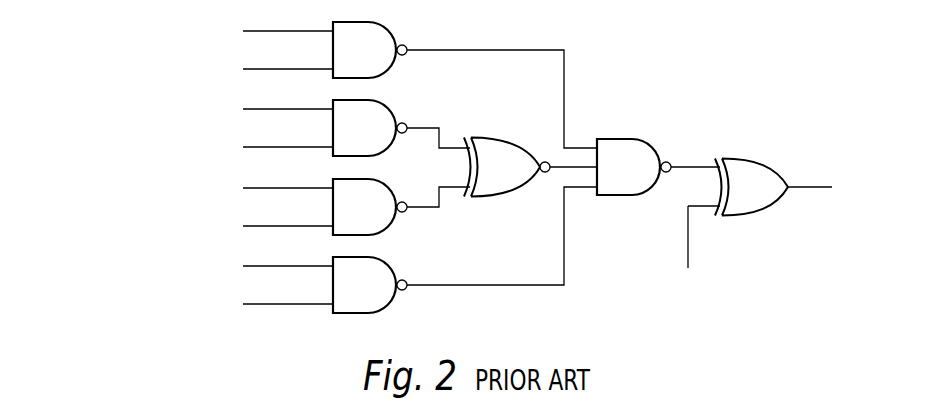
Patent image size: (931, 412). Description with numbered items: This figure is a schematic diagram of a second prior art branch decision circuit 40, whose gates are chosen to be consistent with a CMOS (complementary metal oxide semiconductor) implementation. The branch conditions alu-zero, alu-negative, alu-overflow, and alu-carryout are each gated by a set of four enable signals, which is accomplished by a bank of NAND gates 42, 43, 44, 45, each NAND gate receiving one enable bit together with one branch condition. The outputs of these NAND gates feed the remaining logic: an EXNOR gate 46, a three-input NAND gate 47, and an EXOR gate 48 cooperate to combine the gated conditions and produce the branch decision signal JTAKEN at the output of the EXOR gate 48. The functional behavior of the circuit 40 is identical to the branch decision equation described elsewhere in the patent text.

The second prior art branch decision circuit 40 is at (90, 236).
The NAND gate 42 is at (376, 64).
The NAND gate 43 is at (376, 142).
The NAND gate 44 is at (376, 221).
The NAND gate 45 is at (376, 299).
The EXNOR gate 46 is at (507, 110).
The 3 input NAND gate 47 is at (640, 181).
The EXOR gate 48 is at (748, 162).